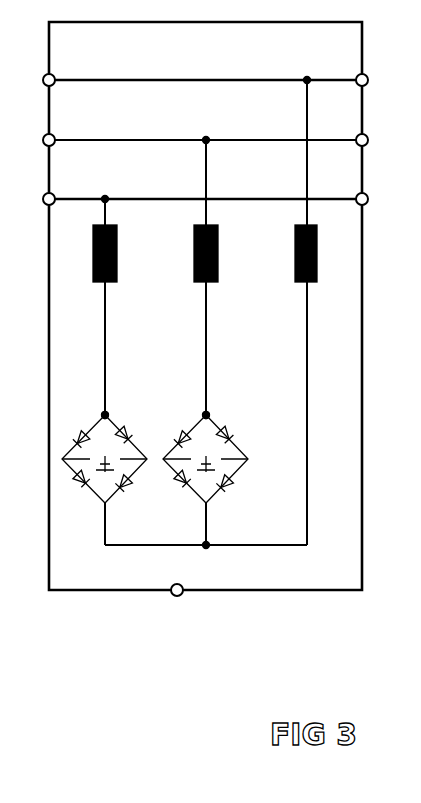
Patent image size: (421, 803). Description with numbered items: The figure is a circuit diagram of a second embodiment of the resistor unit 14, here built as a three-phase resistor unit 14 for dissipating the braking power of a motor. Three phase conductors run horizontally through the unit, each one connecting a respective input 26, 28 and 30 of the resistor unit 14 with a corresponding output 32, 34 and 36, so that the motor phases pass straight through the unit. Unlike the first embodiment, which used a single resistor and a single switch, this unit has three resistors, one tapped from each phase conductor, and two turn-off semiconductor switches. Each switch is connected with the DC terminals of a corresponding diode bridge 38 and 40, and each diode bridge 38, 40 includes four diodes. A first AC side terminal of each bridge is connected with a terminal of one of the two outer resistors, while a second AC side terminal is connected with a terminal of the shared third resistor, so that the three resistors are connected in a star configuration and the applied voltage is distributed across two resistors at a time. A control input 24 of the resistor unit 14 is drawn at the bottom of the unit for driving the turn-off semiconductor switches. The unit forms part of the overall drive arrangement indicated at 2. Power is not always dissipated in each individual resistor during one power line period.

The generator / electrical machine 2 is at (415, 244).
The resistor unit 14 is at (364, 362).
The control input 24 is at (178, 597).
The input 26 is at (44, 75).
The input 28 is at (44, 136).
The input 30 is at (44, 194).
The output 32 is at (369, 77).
The output 34 is at (369, 137).
The output 36 is at (369, 196).
The diode bridge 38 is at (102, 416).
The diode bridge 40 is at (203, 416).